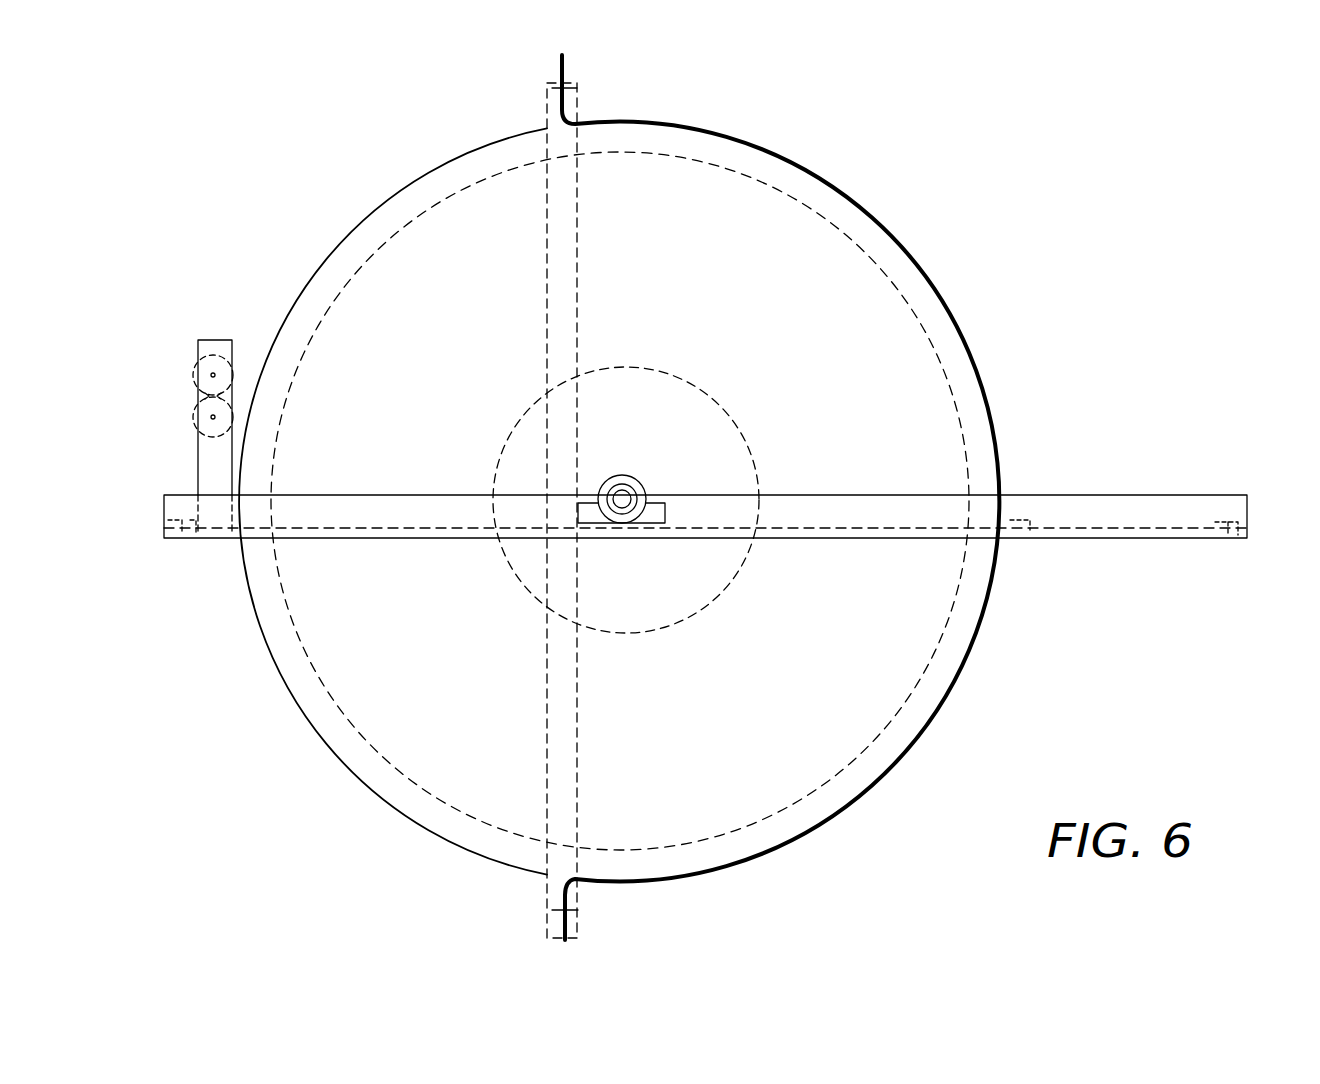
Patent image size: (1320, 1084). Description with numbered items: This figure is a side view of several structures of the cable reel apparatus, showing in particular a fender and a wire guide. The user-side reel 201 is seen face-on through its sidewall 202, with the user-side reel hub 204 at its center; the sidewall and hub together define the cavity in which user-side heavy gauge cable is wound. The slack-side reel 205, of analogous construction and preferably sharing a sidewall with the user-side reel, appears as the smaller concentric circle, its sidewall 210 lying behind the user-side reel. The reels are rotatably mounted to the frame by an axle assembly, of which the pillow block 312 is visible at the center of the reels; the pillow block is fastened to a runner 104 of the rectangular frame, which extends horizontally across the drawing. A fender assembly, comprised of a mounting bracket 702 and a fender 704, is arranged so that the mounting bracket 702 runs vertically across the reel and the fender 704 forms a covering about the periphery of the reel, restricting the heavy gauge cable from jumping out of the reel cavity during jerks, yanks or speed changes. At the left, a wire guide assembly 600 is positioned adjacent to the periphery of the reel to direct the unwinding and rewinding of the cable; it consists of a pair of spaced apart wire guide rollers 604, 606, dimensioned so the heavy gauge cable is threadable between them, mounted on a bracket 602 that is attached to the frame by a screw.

The runner 104 is at (1247, 517).
The user-side reel 201 is at (795, 215).
The sidewall 202 is at (998, 500).
The user-side reel hub 204 is at (935, 340).
The slack-side reel 205 is at (628, 383).
The sidewall 210 is at (772, 445).
The pillow block 312 is at (620, 478).
The wire guide assembly 600 is at (189, 402).
The bracket 602 is at (197, 474).
The wire guide roller 604 is at (226, 360).
The wire guide roller 606 is at (197, 413).
The mounting bracket 702 is at (577, 225).
The fender 704 is at (738, 122).